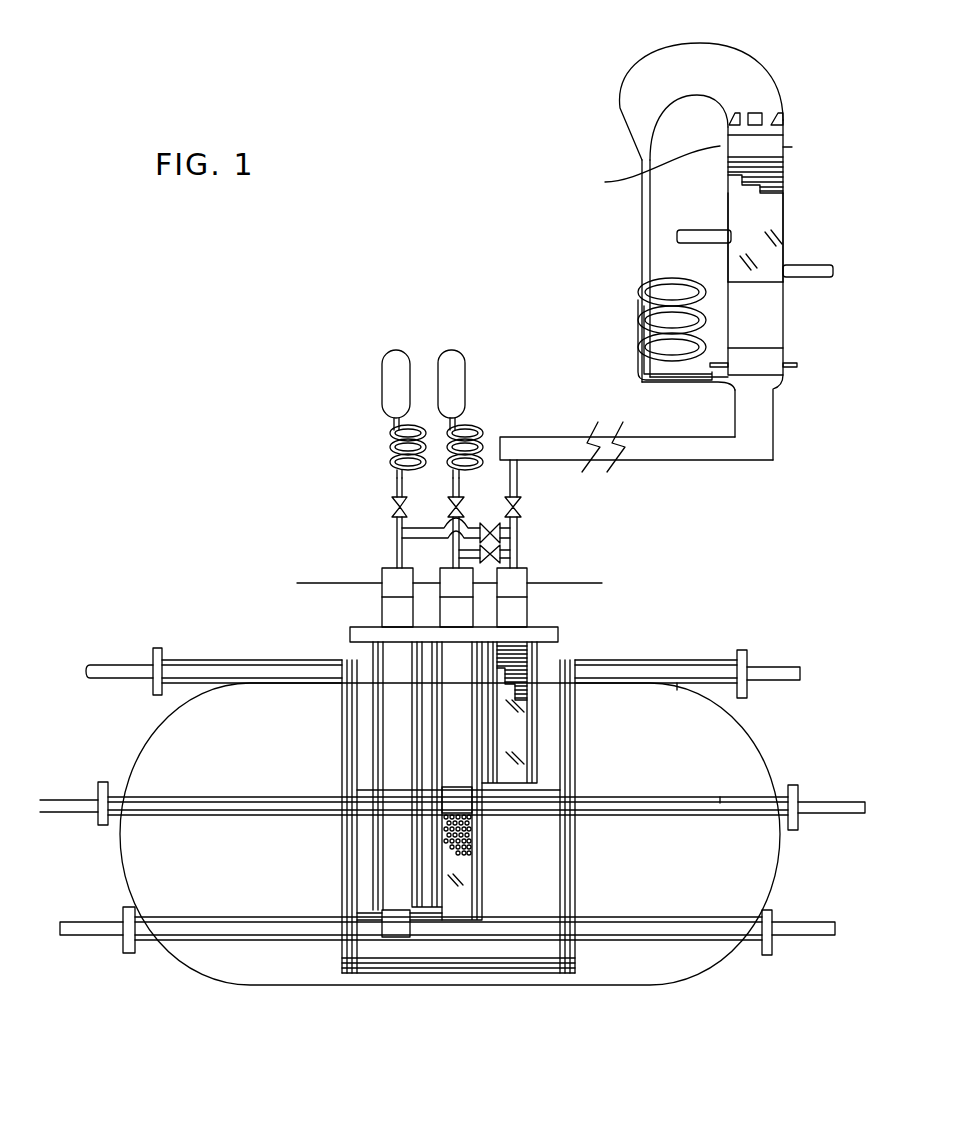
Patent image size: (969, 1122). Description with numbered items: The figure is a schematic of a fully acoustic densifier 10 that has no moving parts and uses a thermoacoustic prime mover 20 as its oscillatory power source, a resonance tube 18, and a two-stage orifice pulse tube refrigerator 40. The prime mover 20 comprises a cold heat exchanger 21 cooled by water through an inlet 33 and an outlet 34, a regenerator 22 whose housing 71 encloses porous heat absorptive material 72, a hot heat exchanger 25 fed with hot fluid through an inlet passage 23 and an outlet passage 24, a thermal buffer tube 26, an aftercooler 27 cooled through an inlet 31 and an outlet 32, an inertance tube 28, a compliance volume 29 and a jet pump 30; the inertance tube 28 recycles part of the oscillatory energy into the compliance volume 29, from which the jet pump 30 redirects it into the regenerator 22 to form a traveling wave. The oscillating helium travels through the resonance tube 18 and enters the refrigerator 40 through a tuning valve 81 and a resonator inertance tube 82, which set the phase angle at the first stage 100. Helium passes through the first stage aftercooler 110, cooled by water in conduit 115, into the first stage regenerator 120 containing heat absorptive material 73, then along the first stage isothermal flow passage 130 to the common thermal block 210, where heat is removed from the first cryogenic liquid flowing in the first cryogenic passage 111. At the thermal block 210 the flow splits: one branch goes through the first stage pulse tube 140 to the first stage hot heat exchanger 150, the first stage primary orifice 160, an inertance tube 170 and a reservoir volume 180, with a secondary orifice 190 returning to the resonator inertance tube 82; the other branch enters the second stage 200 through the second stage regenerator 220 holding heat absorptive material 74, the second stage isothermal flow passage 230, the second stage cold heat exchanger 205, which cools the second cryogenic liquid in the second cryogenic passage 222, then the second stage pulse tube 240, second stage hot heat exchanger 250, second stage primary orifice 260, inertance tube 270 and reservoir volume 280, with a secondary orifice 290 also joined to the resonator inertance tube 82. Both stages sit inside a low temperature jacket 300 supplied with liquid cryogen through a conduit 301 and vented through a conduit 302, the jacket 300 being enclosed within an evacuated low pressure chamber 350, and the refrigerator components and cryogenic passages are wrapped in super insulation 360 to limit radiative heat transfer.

The fully acoustic densifier 10 is at (285, 302).
The resonance tube 18 is at (728, 425).
The thermoacoustic prime mover 20 is at (864, 80).
The cold heat exchanger 21 is at (785, 140).
The regenerator 22 is at (785, 200).
The inlet passage 23 is at (690, 232).
The outlet passage 24 is at (802, 278).
The hot heat exchanger 25 is at (772, 253).
The thermal buffer tube 26 is at (774, 306).
The aftercooler 27 is at (783, 357).
The inertance tube 28 is at (642, 292).
The compliance volume 29 is at (636, 82).
The jet pump 30 is at (788, 115).
The inlet 31 is at (773, 388).
The outlet 32 is at (797, 366).
The inlet 33 is at (646, 170).
The outlet 34 is at (792, 148).
The two-stage orifice pulse tube refrigerator 40 is at (573, 335).
The housing 71 is at (788, 216).
The heat absorptive material 72 is at (784, 178).
The heat absorptive material 73 is at (547, 660).
The heat absorptive material 74 is at (470, 852).
The tuning valve 81 is at (519, 505).
The resonator inertance tube 82 is at (512, 533).
The first stage 100 is at (573, 990).
The first stage aftercooler 110 is at (520, 576).
The first cryogenic passage 111 is at (82, 797).
The conduit 115 is at (595, 583).
The first stage regenerator 120 is at (517, 712).
The first stage isothermal flow passage 130 is at (512, 790).
The first stage pulse tube 140 is at (427, 650).
The first stage hot heat exchanger 150 is at (455, 565).
The first stage primary orifice 160 is at (453, 500).
The inertance tube 170 is at (465, 425).
The reservoir volume 180 is at (462, 361).
The secondary orifice 190 is at (486, 557).
The second stage 200 is at (468, 1015).
The second stage cold heat exchanger 205 is at (390, 930).
The common thermal block 210 is at (462, 805).
The second stage regenerator 220 is at (463, 873).
The second cryogenic passage 222 is at (88, 927).
The second stage isothermal flow passage 230 is at (440, 915).
The second stage pulse tube 240 is at (397, 658).
The second stage hot heat exchanger 250 is at (388, 578).
The second stage primary orifice 260 is at (395, 500).
The inertance tube 270 is at (392, 437).
The reservoir volume 280 is at (383, 373).
The secondary orifice 290 is at (430, 528).
The low temperature jacket 300 is at (562, 756).
The conduit 301 is at (95, 662).
The conduit 302 is at (787, 672).
The low pressure chamber 350 is at (773, 885).
The super insulation 360 is at (560, 792).